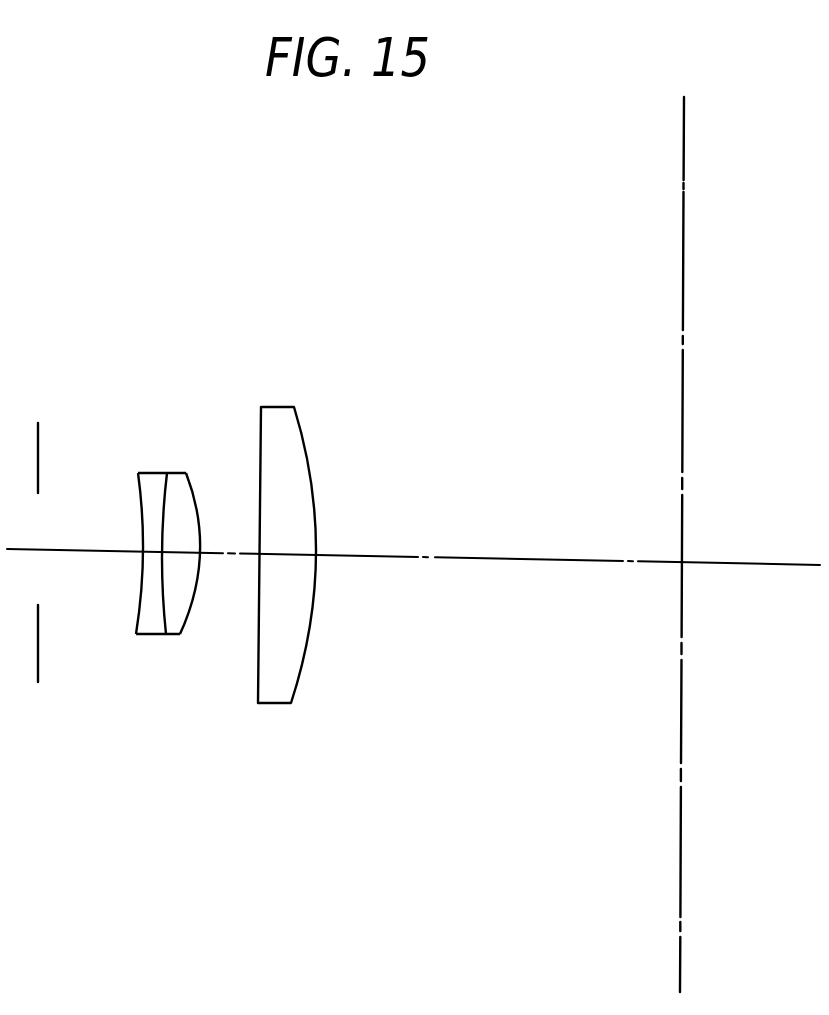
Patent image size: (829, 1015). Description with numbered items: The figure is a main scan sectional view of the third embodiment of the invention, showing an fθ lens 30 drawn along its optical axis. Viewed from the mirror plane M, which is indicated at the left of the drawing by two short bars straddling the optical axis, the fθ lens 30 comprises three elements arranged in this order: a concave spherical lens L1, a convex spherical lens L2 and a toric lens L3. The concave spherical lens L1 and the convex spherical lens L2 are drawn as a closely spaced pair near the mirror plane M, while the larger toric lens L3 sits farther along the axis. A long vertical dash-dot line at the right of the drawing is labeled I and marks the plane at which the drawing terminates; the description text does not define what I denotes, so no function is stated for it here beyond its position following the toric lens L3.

The fθ lens 30 is at (223, 524).
The concave spherical lens L1 is at (158, 580).
The convex spherical lens L2 is at (186, 580).
The toric lens L3 is at (287, 581).
The mirror plane M is at (40, 530).
The image plane I is at (670, 541).